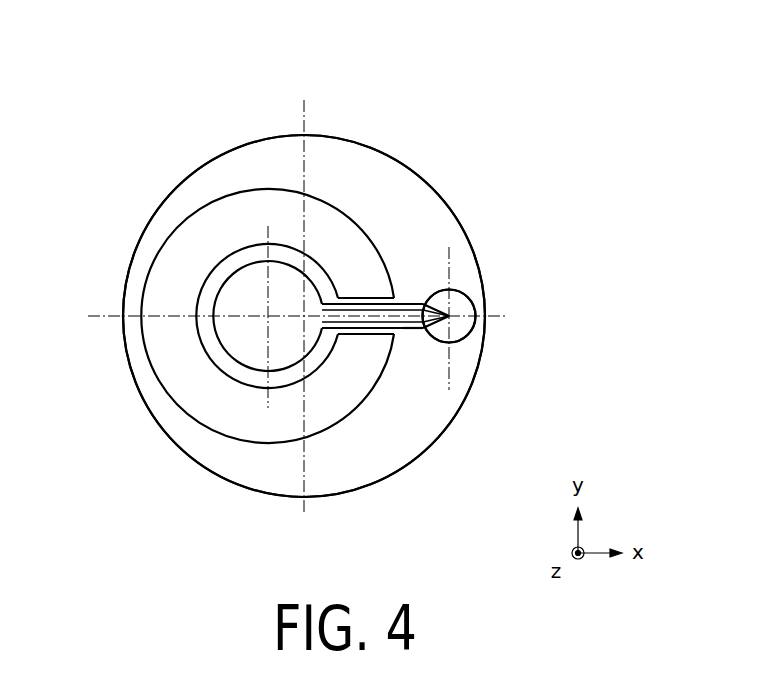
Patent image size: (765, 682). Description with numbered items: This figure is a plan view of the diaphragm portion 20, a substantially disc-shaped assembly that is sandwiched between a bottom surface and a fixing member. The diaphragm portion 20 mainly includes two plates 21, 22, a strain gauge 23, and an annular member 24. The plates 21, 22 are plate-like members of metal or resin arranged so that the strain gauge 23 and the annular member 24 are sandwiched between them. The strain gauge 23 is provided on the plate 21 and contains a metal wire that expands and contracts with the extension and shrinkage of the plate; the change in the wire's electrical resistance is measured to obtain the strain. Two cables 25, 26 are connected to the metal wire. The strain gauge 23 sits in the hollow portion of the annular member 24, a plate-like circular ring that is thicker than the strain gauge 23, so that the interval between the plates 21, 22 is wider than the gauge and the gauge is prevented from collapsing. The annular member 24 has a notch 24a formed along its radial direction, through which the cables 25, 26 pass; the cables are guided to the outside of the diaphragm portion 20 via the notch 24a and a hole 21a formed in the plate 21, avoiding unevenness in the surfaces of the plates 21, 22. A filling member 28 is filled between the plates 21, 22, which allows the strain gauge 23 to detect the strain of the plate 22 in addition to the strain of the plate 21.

The diaphragm portion 20 is at (494, 43).
The plate 21 is at (307, 312).
The plate 22 is at (327, 301).
The strain gauge 23 is at (192, 343).
The annular member 24 is at (229, 279).
The notch 24a is at (422, 394).
The cable 25 is at (434, 267).
The hole 21a is at (494, 301).
The cable 26 is at (463, 375).
The filling member 28 is at (493, 336).